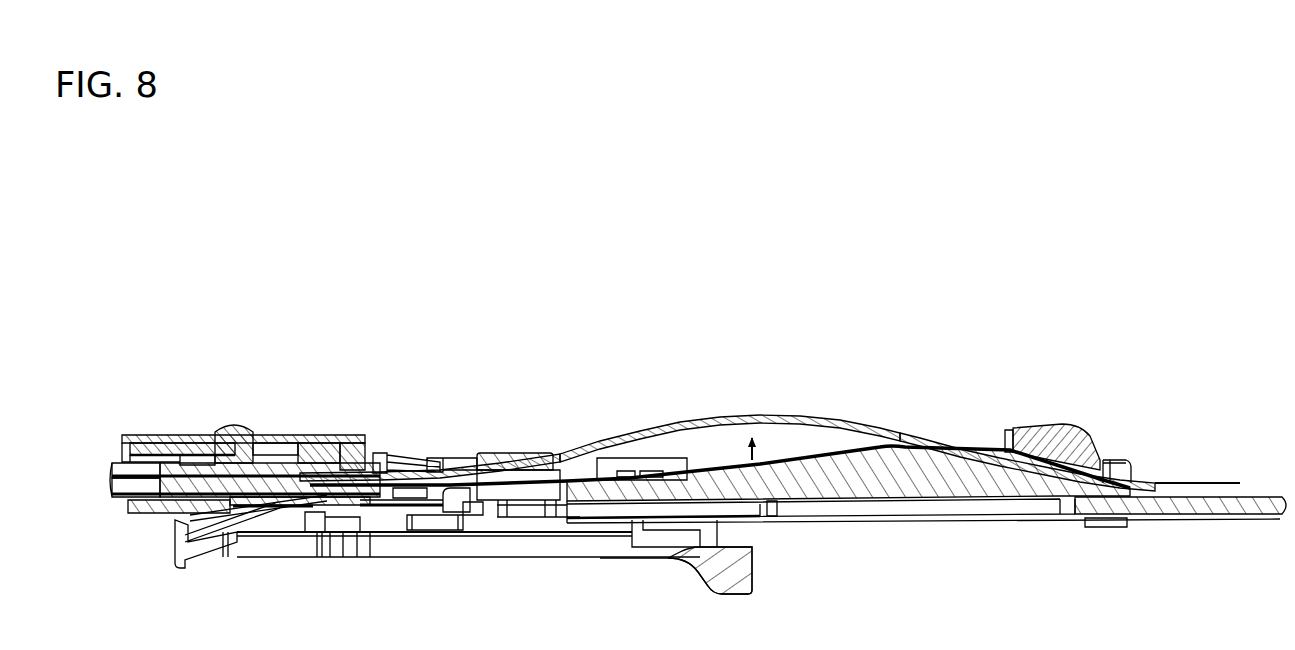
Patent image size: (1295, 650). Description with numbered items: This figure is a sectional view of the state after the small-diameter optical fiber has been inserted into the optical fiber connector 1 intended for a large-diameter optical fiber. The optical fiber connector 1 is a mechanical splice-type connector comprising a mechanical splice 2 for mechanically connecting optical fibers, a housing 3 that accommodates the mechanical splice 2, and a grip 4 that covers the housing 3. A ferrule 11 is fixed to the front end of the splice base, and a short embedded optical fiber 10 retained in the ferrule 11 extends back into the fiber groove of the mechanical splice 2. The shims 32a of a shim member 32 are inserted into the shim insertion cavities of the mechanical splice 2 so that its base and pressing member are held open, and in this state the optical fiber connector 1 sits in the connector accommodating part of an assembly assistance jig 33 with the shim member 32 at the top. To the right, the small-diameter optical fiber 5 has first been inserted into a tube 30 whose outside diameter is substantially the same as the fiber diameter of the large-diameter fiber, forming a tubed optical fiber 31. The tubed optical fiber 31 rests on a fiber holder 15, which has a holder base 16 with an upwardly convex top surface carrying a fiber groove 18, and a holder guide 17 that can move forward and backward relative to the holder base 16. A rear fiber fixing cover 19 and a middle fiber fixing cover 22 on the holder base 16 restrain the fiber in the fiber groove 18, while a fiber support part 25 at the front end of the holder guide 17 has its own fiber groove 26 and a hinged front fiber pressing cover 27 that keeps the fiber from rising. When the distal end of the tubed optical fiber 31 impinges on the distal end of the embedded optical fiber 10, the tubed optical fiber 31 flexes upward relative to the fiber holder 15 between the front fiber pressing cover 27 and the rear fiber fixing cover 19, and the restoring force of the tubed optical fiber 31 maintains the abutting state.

The optical fiber connector 1 is at (420, 443).
The mechanical splice 2 is at (268, 468).
The housing 3 is at (277, 503).
The grip 4 is at (192, 517).
The small-diameter optical fiber 5 is at (315, 532).
The embedded optical fiber 10 is at (133, 468).
The ferrule 11 is at (120, 483).
The fiber holder 15 is at (1113, 453).
The holder base 16 is at (1007, 527).
The holder guide 17 is at (668, 528).
The fiber groove 18 is at (883, 447).
The rear fiber fixing cover 19 is at (1037, 427).
The middle fiber fixing cover 22 is at (637, 458).
The fiber support part 25 is at (457, 503).
The fiber groove 26 is at (513, 487).
The front fiber pressing cover 27 is at (493, 460).
The tube 30 is at (927, 430).
The tubed optical fiber 31 is at (957, 432).
The shim member 32 is at (152, 433).
The shim 32a is at (237, 450).
The assembly assistance jig 33 is at (410, 557).